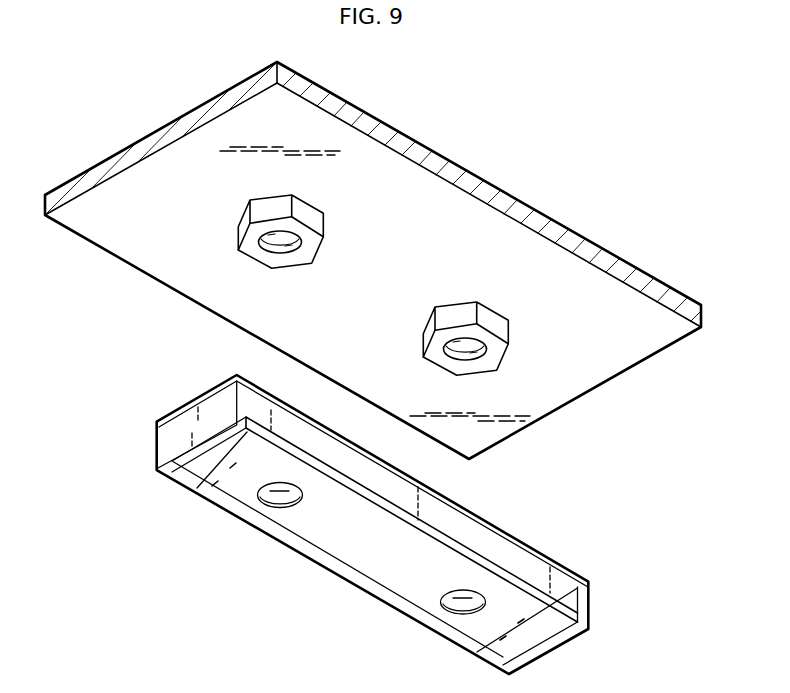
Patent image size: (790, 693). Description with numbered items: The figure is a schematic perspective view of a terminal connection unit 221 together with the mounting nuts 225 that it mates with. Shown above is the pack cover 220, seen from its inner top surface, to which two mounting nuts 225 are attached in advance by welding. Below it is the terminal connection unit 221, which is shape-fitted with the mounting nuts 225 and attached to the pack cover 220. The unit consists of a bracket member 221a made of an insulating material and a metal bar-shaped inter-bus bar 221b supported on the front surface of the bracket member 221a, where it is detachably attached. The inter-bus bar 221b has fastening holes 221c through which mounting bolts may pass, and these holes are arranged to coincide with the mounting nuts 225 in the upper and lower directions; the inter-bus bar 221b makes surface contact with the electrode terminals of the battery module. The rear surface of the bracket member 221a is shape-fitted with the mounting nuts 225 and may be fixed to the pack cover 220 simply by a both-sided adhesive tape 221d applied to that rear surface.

The pack cover 220 is at (563, 240).
The mounting nut 225 is at (306, 255).
The terminal connection unit 221 is at (413, 524).
The bracket member 221a is at (570, 594).
The inter-bus bar 221b is at (407, 583).
The fastening hole 221c is at (283, 498).
The both-sided adhesive tape 221d is at (520, 541).